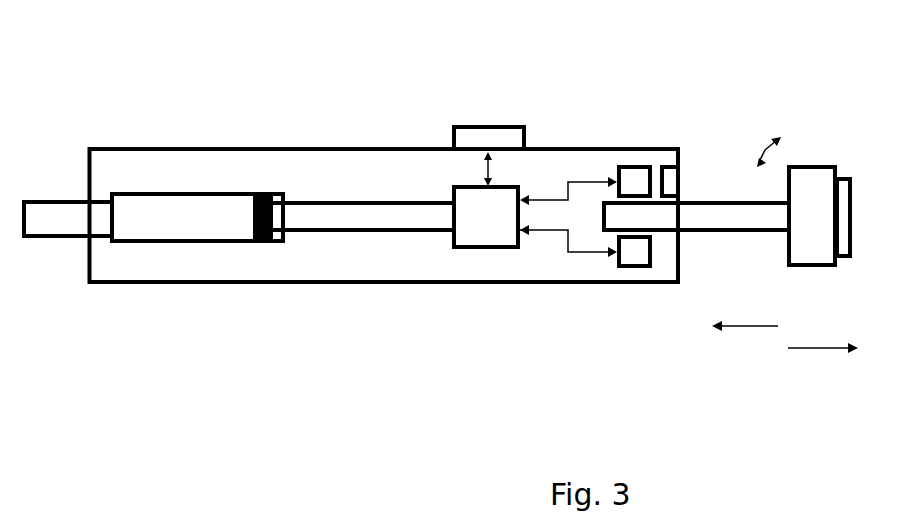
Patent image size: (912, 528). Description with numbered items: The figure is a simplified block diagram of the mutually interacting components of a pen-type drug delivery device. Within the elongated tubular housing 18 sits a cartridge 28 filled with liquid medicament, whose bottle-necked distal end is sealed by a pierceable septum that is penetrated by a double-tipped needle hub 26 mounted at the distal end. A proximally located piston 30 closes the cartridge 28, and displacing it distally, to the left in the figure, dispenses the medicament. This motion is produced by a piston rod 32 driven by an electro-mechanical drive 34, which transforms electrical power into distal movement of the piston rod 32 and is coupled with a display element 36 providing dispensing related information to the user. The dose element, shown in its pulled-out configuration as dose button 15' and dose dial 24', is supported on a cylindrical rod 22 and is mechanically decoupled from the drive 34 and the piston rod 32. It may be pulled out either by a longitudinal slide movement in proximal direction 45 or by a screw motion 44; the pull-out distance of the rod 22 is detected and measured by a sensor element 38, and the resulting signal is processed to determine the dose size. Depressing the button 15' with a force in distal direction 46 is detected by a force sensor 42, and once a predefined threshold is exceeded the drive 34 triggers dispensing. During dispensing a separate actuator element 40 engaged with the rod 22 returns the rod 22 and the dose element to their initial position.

The housing 18 is at (180, 147).
The cylindrical rod 22 is at (702, 210).
The dose dial in pulled-out configuration 24' is at (812, 176).
The dose button in pulled-out configuration 15' is at (856, 175).
The needle hub 26 is at (67, 238).
The cartridge 28 is at (167, 243).
The piston 30 is at (260, 245).
The piston rod 32 is at (357, 232).
The electro-mechanical drive 34 is at (478, 247).
The display element 36 is at (487, 127).
The sensor element 38 is at (628, 167).
The actuator element 40 is at (633, 266).
The force sensor 42 is at (670, 167).
The screw motion 44 is at (765, 150).
The proximal direction 45 is at (820, 349).
The distal direction 46 is at (748, 327).